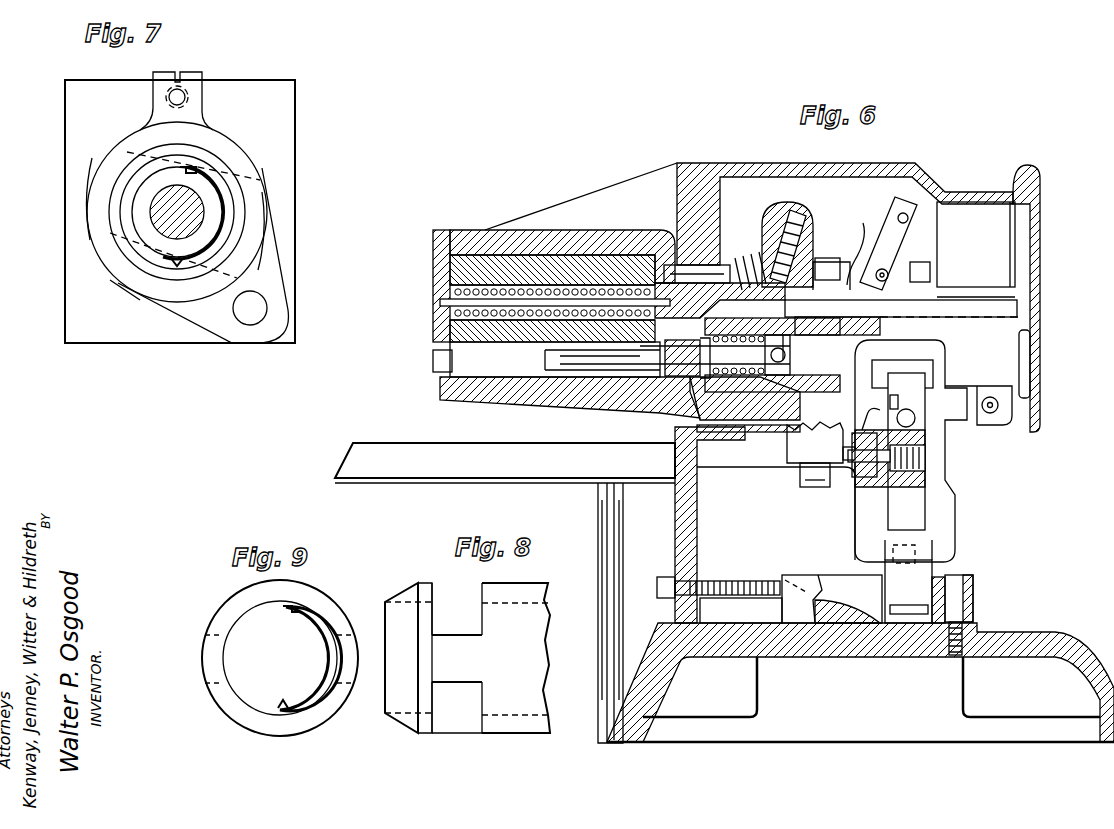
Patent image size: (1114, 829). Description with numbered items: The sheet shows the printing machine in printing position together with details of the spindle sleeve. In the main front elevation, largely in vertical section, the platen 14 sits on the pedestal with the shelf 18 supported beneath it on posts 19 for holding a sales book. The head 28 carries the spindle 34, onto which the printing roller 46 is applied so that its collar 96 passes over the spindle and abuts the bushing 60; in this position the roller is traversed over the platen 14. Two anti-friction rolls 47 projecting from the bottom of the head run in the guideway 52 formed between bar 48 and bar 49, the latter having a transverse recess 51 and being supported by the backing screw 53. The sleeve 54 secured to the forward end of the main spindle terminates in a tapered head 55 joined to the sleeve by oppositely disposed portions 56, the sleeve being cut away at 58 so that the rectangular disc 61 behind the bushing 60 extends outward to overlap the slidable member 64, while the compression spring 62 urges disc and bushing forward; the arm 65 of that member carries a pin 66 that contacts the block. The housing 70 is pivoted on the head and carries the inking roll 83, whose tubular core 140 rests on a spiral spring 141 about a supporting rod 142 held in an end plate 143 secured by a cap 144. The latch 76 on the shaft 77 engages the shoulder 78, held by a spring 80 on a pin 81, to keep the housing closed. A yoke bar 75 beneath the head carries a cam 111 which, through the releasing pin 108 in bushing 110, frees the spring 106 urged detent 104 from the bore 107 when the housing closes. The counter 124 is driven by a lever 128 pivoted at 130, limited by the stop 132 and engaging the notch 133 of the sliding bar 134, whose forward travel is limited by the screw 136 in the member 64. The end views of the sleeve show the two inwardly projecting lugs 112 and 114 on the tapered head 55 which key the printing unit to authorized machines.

In FIG. 6, the platen 14 is at (440, 378).
In FIG. 6, the shelf 18 is at (428, 446).
In FIG. 6, the posts 19 is at (621, 613).
In FIG. 7, the head 28 is at (280, 108).
In FIG. 6, the head 28 is at (948, 516).
In FIG. 7, the spindle 34 is at (165, 232).
In FIG. 6, the printing roller 46 is at (510, 393).
In FIG. 6, the anti-friction rolls 47 is at (922, 578).
In FIG. 6, the bar 48 is at (975, 608).
In FIG. 6, the bar 49 is at (830, 578).
In FIG. 6, the recess 51 is at (858, 610).
In FIG. 6, the guideway 52 is at (908, 614).
In FIG. 6, the backing screw 53 is at (742, 580).
In FIG. 8, the sleeve 54 is at (538, 590).
In FIG. 7, the tapered head 55 is at (115, 198).
In FIG. 8, the tapered head 55 is at (406, 598).
In FIG. 6, the tapered head 55 is at (662, 428).
In FIG. 9, the connecting portions 56 is at (215, 637).
In FIG. 8, the connecting portions 56 is at (458, 640).
In FIG. 8, the cut-away openings 58 is at (456, 716).
In FIG. 7, the bushing 60 is at (208, 195).
In FIG. 7, the disc 61 is at (125, 150).
In FIG. 6, the compression spring 62 is at (772, 355).
In FIG. 7, the member 64 is at (140, 292).
In FIG. 7, the arm 65 is at (265, 280).
In FIG. 7, the pin 66 is at (258, 312).
In FIG. 6, the housing 70 is at (765, 163).
In FIG. 6, the bar 75 is at (810, 478).
In FIG. 6, the latch 76 is at (765, 240).
In FIG. 6, the shaft 77 is at (770, 215).
In FIG. 6, the shoulder 78 is at (820, 260).
In FIG. 6, the spring 80 is at (720, 300).
In FIG. 6, the pin 81 is at (677, 268).
In FIG. 6, the inking roll 83 is at (565, 262).
In FIG. 6, the collar 96 is at (690, 350).
In FIG. 6, the detent 104 is at (906, 468).
In FIG. 6, the spring 106 is at (928, 450).
In FIG. 6, the bore 107 is at (862, 428).
In FIG. 6, the releasing pin 108 is at (862, 478).
In FIG. 6, the bushing 110 is at (850, 480).
In FIG. 6, the cam 111 is at (803, 460).
In FIG. 7, the lug 112 is at (196, 168).
In FIG. 9, the lug 112 is at (292, 612).
In FIG. 7, the lug 114 is at (178, 266).
In FIG. 9, the lug 114 is at (288, 703).
In FIG. 6, the counter 124 is at (976, 249).
In FIG. 6, the lever 128 is at (893, 210).
In FIG. 6, the pivot 130 is at (895, 270).
In FIG. 6, the stop 132 is at (860, 226).
In FIG. 6, the notch 133 is at (895, 318).
In FIG. 6, the bar 134 is at (1012, 318).
In FIG. 7, the screw 136 is at (186, 94).
In FIG. 6, the screw 136 is at (901, 316).
In FIG. 6, the tubular core 140 is at (528, 275).
In FIG. 6, the spiral spring 141 is at (445, 316).
In FIG. 6, the supporting rod 142 is at (445, 293).
In FIG. 6, the end plate 143 is at (433, 256).
In FIG. 6, the cap 144 is at (440, 268).